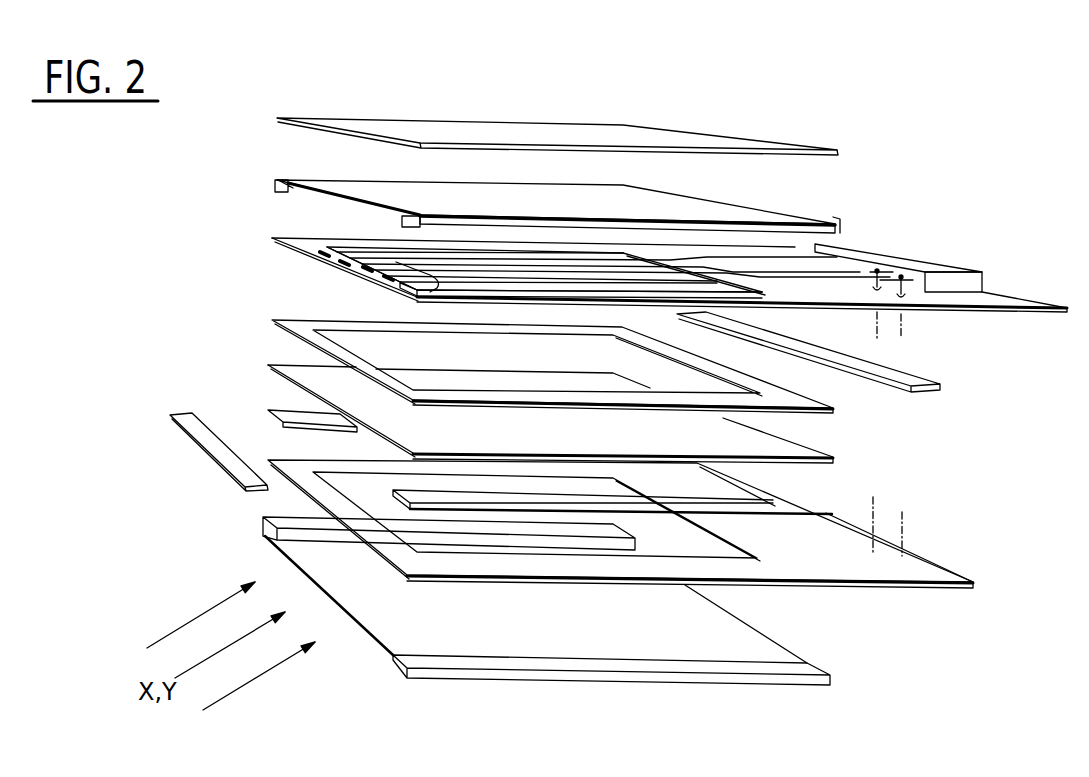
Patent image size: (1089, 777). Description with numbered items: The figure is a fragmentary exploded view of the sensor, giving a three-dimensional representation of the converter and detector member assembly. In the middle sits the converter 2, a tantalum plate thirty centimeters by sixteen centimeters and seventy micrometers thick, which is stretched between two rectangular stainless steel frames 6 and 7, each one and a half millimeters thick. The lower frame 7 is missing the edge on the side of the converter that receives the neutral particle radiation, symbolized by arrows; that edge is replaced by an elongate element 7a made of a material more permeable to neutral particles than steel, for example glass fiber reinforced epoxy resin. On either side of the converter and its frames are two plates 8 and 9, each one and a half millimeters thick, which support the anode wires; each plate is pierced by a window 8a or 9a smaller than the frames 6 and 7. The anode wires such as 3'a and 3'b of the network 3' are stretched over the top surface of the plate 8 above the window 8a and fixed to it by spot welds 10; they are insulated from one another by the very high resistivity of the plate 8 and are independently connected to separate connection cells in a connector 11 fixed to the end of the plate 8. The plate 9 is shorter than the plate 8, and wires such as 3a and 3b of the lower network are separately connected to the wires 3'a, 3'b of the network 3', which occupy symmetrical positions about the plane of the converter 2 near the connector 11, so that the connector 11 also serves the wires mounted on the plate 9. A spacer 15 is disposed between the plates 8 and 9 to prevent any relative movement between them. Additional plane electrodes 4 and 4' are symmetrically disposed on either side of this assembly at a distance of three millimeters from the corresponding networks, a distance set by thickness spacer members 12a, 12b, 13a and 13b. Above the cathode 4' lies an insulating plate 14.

The insulating plate 14 is at (623, 130).
The cathode 4' is at (561, 194).
The spacer member 13a is at (834, 226).
The spacer member 13b is at (275, 183).
The network 3' is at (554, 263).
The spot welds 10 is at (330, 272).
The anode wire 3'a is at (379, 287).
The anode wire 3'b is at (335, 274).
The plate 8 is at (985, 312).
The window 8a is at (622, 282).
The connector 11 is at (911, 255).
The anode wire 3a is at (900, 333).
The anode wire 3b is at (877, 337).
The spacer 15 is at (940, 389).
The frame 6 is at (836, 409).
The converter 2 is at (836, 457).
The frame 7 is at (812, 504).
The elongate element 7a is at (208, 443).
The plate 9 is at (695, 555).
The window 9a is at (725, 548).
The plane electrode 4 is at (555, 606).
The spacer member 12a is at (816, 668).
The spacer member 12b is at (262, 522).